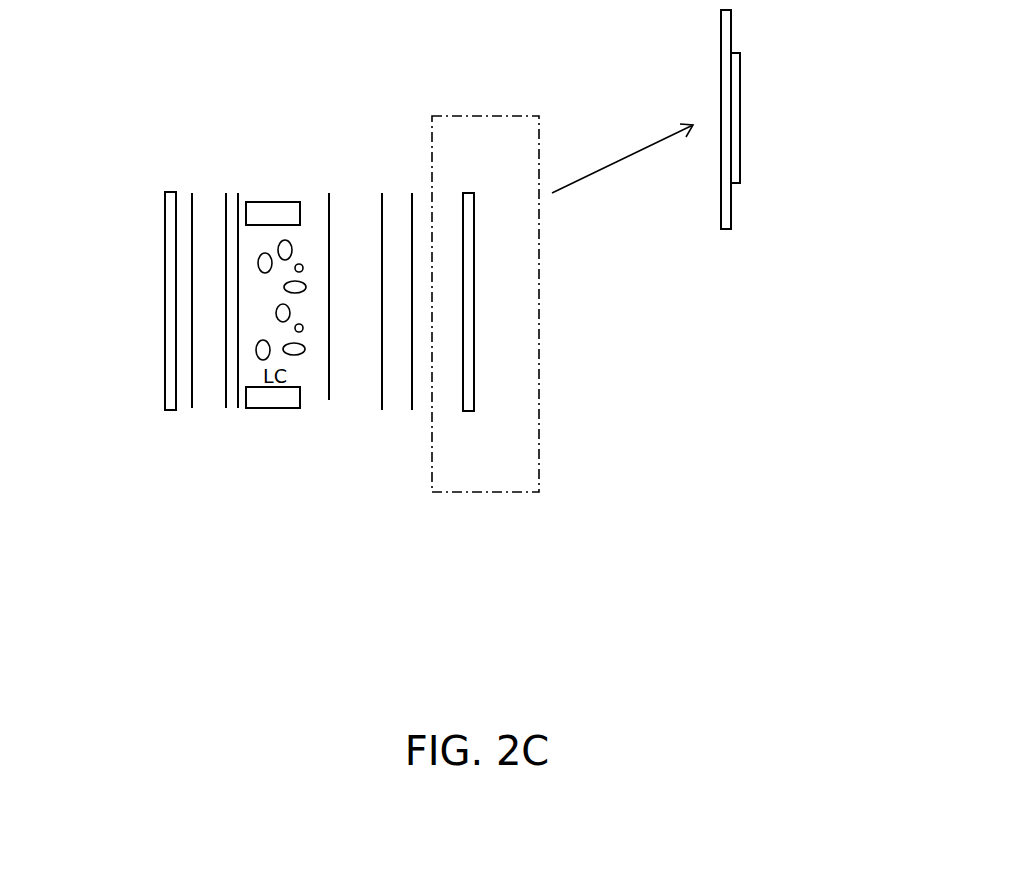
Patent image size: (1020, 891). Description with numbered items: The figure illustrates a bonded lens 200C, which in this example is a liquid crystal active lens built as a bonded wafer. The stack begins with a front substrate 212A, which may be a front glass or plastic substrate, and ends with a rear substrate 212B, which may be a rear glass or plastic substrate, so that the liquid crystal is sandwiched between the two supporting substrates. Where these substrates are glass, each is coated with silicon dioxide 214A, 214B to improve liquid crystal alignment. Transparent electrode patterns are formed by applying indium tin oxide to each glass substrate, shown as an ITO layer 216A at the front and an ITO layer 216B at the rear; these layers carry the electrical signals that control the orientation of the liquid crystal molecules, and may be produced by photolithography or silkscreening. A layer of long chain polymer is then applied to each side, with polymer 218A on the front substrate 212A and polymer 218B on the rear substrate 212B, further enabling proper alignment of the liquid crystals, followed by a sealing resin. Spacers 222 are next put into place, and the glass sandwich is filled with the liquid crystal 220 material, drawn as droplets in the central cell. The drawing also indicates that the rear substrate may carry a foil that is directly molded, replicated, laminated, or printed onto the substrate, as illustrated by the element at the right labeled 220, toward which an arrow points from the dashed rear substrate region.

The bonded lens 200C is at (440, 713).
The front substrate 212A is at (165, 205).
The rear substrate 212B is at (485, 116).
The silicon dioxide 214A is at (192, 207).
The silicon dioxide 214B is at (412, 196).
The ITO layer 216A is at (228, 410).
The ITO layer 216B is at (382, 410).
The polymer 218A is at (238, 402).
The polymer 218B is at (329, 400).
The liquid crystal 220 is at (740, 75).
The spacers 222 is at (268, 203).